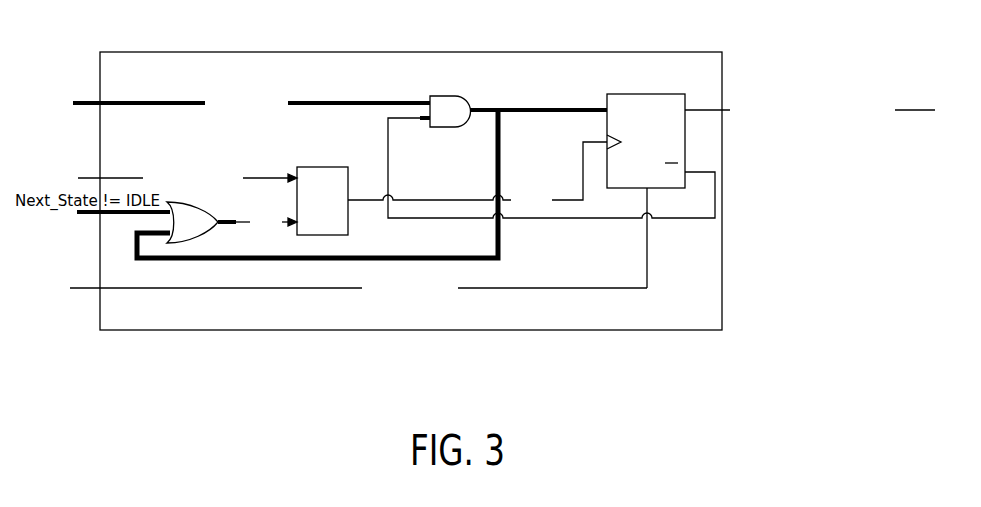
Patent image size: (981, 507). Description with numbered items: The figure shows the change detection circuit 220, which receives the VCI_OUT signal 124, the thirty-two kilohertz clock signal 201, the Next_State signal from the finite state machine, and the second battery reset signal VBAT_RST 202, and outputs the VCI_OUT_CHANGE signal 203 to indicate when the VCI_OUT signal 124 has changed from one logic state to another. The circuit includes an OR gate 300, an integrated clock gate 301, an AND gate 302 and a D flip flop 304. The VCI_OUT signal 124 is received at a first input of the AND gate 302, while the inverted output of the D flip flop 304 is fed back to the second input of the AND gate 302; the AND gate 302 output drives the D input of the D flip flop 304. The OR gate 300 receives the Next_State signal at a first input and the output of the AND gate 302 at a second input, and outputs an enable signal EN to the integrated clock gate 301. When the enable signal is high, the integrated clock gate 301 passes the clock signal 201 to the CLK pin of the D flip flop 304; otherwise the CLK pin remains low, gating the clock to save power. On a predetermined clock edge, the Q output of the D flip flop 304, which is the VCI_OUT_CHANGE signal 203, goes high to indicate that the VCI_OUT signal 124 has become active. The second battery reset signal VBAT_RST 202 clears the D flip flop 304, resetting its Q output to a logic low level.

The VCI_OUT signal 124 is at (74, 103).
The clock signal (CLK_32 KHz) 201 is at (79, 178).
The second battery reset signal (VBAT_RST) 202 is at (71, 288).
The VCI_OUT_CHANGE signal 203 is at (914, 110).
The change detection circuit 220 is at (655, 330).
The OR gate 300 is at (205, 237).
The integrated clock gate 301 is at (320, 236).
The AND gate 302 is at (443, 96).
The D flip flop 304 is at (642, 94).